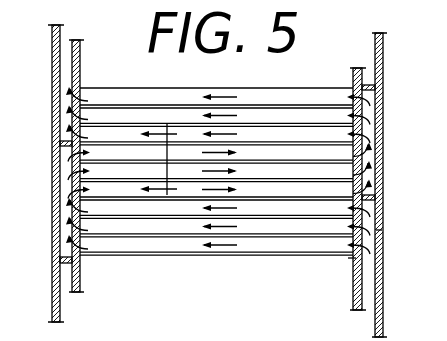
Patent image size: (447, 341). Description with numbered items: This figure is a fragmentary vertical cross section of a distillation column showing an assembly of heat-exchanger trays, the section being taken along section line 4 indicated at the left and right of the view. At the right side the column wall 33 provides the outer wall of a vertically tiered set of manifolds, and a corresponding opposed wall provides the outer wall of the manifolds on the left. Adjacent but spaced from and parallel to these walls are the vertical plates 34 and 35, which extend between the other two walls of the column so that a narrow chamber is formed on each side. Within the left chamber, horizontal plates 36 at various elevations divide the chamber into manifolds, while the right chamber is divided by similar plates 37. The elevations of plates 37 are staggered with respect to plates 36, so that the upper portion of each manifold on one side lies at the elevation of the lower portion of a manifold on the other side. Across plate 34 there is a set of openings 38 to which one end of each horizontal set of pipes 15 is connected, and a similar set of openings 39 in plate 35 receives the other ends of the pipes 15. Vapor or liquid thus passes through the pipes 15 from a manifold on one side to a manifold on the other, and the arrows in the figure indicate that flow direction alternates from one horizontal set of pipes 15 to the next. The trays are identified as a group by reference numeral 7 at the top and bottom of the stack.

The section line 4- 4 is at (40, 110).
The heat exchange plates 7 is at (143, 128).
The pipes 15 is at (277, 118).
The wall 33 is at (384, 262).
The plate 34 is at (78, 48).
The plate 35 is at (352, 72).
The horizontal plates 36 is at (60, 147).
The plates 37 is at (362, 72).
The openings 38 is at (80, 95).
The openings 39 is at (355, 253).